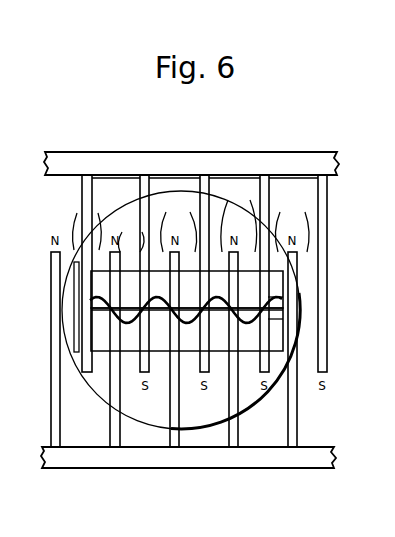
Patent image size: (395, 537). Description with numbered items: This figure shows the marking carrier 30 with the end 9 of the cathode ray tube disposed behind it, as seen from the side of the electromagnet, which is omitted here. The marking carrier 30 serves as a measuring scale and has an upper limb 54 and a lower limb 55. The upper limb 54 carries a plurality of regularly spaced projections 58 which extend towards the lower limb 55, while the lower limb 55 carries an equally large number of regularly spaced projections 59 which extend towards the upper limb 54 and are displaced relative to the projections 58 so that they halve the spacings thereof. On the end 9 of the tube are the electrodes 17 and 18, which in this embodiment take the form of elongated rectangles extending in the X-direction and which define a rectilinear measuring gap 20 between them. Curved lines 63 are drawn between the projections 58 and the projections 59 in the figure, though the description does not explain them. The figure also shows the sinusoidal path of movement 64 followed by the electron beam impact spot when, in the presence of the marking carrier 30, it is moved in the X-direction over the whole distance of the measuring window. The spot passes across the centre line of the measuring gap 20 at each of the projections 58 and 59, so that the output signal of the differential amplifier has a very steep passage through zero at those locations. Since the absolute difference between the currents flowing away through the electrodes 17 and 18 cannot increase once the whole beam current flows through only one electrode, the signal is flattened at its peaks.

The end of the cathode ray tube 9 is at (90, 386).
The electrode 17 is at (281, 285).
The electrode 18 is at (281, 330).
The measuring gap 20 is at (92, 318).
The marking carrier 30 is at (340, 156).
The upper limb 54 is at (228, 164).
The lower limb 55 is at (253, 456).
The projections 58 is at (140, 186).
The projections 59 is at (110, 421).
The flux lines 63 is at (79, 230).
The sinusoidal path of movement 64 is at (88, 290).